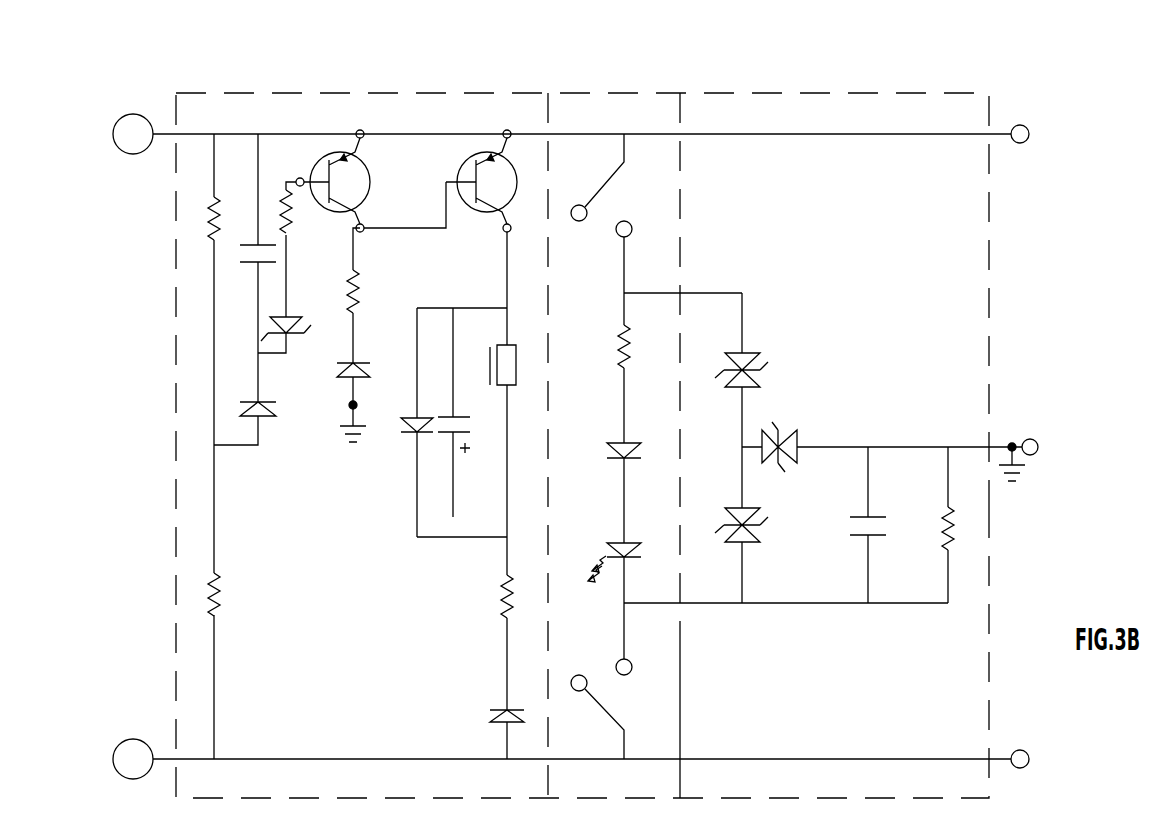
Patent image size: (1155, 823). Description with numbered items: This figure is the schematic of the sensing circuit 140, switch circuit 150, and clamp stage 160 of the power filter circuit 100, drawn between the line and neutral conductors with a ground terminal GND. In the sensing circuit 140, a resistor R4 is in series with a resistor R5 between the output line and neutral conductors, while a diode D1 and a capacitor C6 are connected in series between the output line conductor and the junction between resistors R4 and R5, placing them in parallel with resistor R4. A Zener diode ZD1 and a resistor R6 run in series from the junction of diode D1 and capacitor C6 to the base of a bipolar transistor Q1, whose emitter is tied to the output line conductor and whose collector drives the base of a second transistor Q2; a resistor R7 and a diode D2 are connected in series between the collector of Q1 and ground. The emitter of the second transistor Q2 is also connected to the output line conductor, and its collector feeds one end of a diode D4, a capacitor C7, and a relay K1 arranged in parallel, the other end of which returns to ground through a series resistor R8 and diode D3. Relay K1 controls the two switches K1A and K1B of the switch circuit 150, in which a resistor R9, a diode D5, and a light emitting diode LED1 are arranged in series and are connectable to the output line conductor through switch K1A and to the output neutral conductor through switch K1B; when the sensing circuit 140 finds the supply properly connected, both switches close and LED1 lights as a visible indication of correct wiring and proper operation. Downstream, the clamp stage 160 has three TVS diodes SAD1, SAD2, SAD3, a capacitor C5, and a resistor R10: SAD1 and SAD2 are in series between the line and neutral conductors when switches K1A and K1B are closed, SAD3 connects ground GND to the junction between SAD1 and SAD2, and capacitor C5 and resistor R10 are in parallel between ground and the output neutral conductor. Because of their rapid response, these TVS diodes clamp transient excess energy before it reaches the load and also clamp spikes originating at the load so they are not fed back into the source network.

The power filter circuit 100 is at (930, 64).
The sensing circuit 140 is at (366, 393).
The switch circuit 150 is at (652, 393).
The clamp stage 160 is at (837, 315).
The resistor R4 is at (225, 353).
The resistor R5 is at (225, 666).
The resistor R6 is at (296, 247).
The resistor R7 is at (365, 295).
The resistor R8 is at (496, 642).
The resistor R9 is at (613, 384).
The resistor R10 is at (935, 525).
The capacitor C5 is at (862, 525).
The capacitor C6 is at (251, 268).
The capacitor C7 is at (461, 412).
The diode D1 is at (245, 408).
The diode D2 is at (350, 387).
The diode D3 is at (497, 732).
The diode D4 is at (422, 422).
The diode D5 is at (611, 492).
The Zener diode ZD1 is at (292, 318).
The bipolar transistor Q1 is at (340, 181).
The second transistor Q2 is at (440, 181).
The relay K1 is at (466, 403).
The switch K1A is at (615, 229).
The switch K1B is at (618, 709).
The light emitting diode LED1 is at (610, 585).
The TVS diode SAD1 is at (763, 358).
The TVS diode SAD2 is at (758, 537).
The TVS diode SAD3 is at (877, 432).
The ground terminal GND is at (1024, 444).